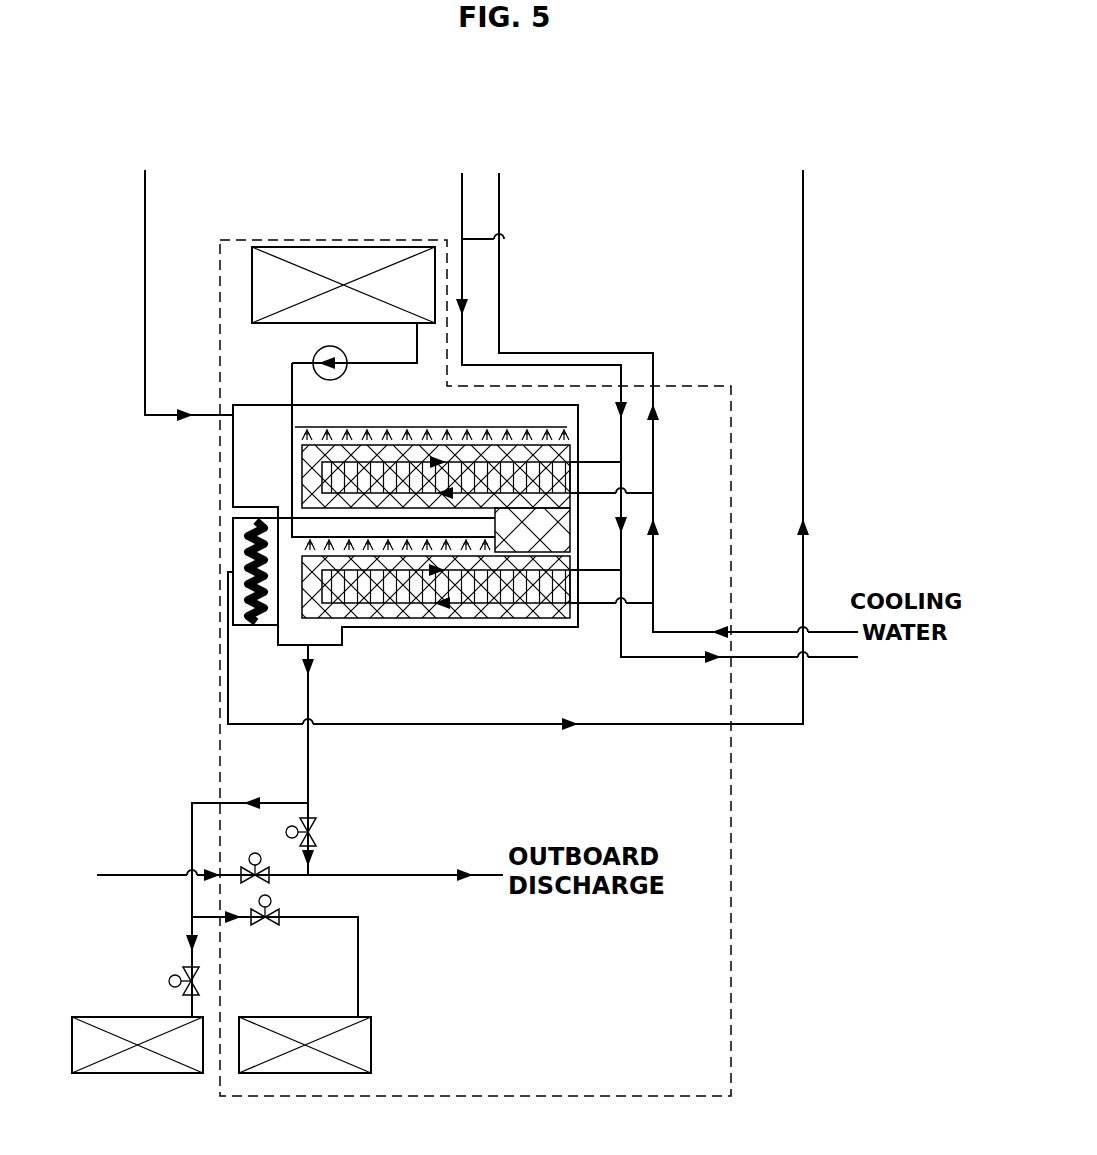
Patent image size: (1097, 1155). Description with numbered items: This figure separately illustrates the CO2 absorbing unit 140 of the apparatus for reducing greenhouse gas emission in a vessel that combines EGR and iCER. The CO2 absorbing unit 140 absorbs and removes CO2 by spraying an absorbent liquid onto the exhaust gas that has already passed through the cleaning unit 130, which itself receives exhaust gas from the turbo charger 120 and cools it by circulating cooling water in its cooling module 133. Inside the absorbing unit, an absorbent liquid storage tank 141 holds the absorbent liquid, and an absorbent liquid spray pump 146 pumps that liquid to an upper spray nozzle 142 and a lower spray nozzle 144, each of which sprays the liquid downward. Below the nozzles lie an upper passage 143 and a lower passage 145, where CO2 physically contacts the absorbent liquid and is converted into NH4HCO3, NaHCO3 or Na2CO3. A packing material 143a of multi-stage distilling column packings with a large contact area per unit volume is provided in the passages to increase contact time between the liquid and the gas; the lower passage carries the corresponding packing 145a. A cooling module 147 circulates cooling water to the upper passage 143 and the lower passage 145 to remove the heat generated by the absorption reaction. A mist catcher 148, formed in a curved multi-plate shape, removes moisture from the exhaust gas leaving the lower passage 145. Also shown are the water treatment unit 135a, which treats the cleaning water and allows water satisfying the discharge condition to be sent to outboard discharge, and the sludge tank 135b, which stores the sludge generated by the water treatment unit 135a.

The turbo charger 120 is at (822, 169).
The cleaning unit 130 is at (162, 169).
The cooling module 133 is at (657, 407).
The absorbent liquid storage tank 141 is at (343, 285).
The upper spray nozzle 142 is at (405, 525).
The upper passage 143 is at (300, 476).
The packing material 143a is at (298, 446).
The lower spray nozzle 144 is at (431, 457).
The lower passage 145 is at (297, 585).
The second spray nozzle 145a is at (300, 604).
The absorbent liquid spray pump 146 is at (354, 362).
The cooling module 147 is at (611, 532).
The mist catcher 148 is at (232, 542).
The water treatment unit 135a is at (275, 869).
The sludge tank 135b is at (190, 935).
The CO2 absorbing unit 140 is at (281, 984).